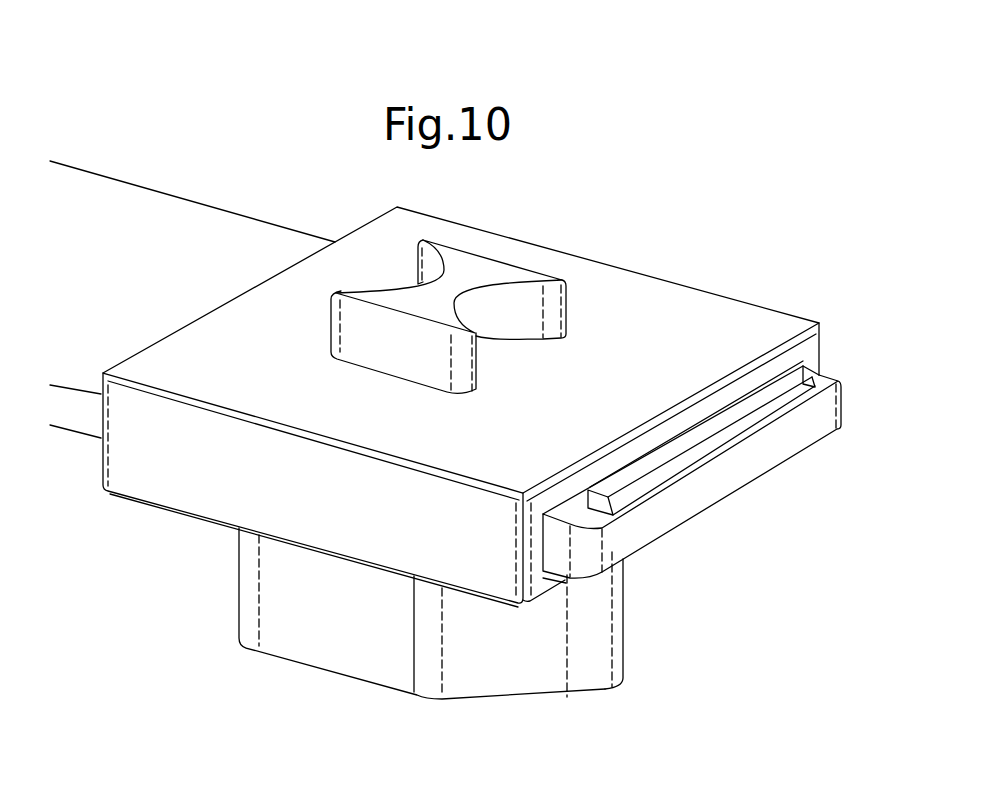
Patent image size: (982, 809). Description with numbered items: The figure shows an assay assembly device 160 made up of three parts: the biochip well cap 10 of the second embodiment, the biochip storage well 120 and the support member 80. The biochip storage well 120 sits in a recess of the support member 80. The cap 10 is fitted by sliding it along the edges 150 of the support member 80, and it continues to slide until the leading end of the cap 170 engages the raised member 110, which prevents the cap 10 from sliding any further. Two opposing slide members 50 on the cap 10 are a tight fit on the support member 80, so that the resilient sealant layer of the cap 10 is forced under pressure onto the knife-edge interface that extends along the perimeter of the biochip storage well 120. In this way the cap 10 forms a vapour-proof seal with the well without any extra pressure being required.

The biochip well cap 10 is at (746, 300).
The slide member 50 is at (537, 590).
The support member 80 is at (262, 221).
The raised member 110 is at (703, 452).
The biochip storage well 120 is at (628, 616).
The edges of the support member 150 is at (83, 393).
The assay assembly device 160 is at (186, 95).
The leading end of the cap 170 is at (803, 353).